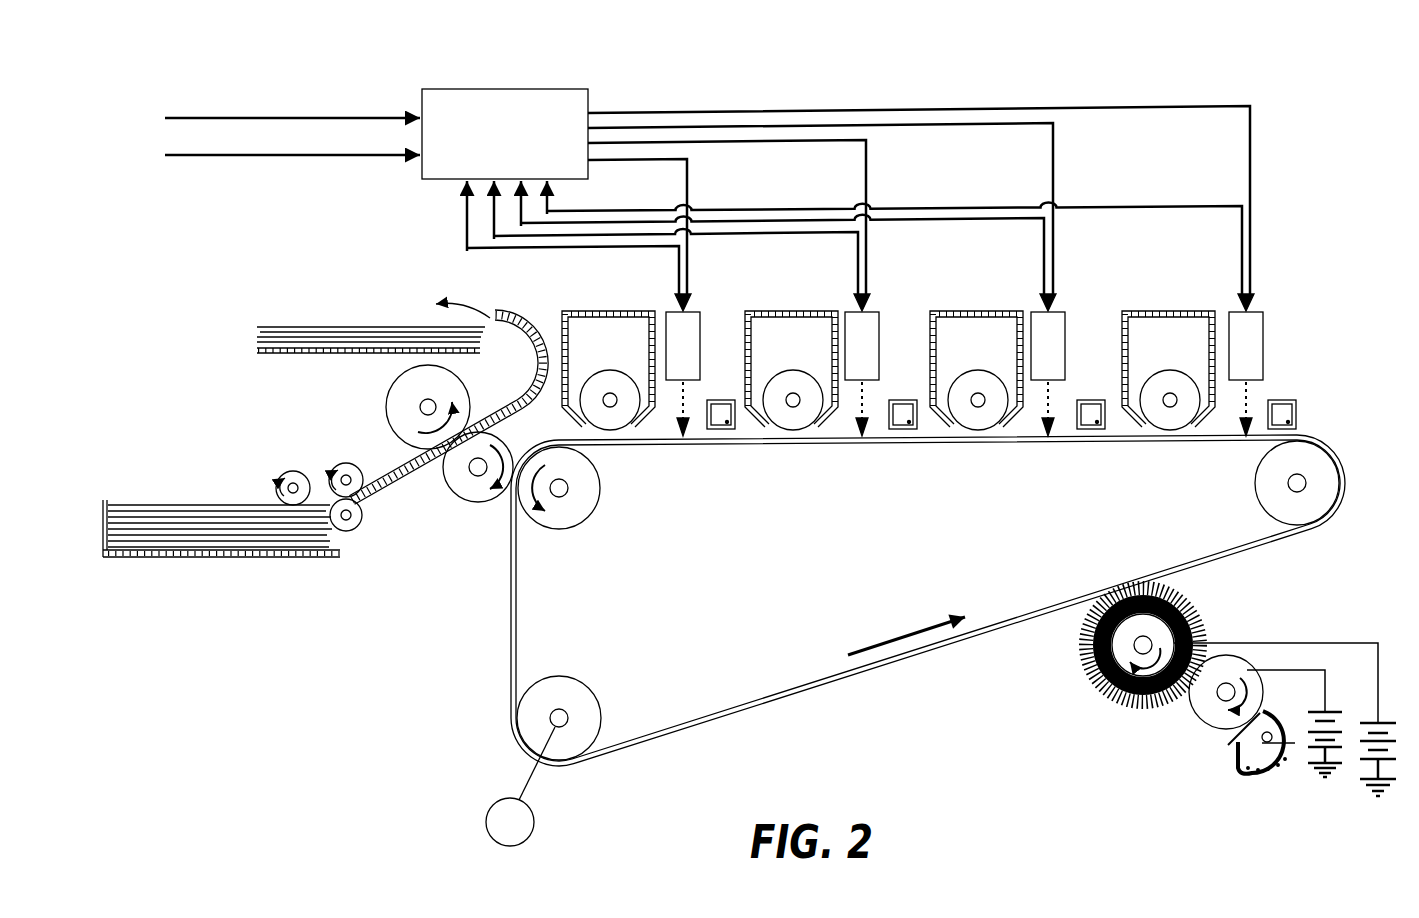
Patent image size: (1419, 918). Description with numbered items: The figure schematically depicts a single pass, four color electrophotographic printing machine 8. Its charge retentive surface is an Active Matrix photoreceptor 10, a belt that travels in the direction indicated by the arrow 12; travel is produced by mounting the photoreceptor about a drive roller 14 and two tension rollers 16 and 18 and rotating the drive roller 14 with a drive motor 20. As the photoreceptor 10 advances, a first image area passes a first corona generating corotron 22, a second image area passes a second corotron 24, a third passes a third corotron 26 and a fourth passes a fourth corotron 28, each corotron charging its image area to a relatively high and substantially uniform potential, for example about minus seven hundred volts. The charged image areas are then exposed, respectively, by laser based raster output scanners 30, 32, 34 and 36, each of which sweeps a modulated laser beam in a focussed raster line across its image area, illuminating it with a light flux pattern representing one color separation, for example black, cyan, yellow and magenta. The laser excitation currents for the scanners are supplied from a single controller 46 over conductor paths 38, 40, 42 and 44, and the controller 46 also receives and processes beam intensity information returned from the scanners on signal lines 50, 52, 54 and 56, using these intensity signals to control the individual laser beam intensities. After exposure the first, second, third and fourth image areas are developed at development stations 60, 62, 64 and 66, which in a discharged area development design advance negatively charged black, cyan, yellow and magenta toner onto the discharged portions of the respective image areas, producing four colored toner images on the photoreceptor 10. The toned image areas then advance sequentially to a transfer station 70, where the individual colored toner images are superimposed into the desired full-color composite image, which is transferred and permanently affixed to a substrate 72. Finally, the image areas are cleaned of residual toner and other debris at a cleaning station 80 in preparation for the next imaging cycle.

The printing machine 8 is at (1290, 140).
The photoreceptor 10 is at (740, 704).
The arrow 12 is at (898, 637).
The drive roller 14 is at (591, 702).
The tension roller 16 is at (1310, 506).
The tension roller 18 is at (578, 516).
The drive motor 20 is at (500, 843).
The first corona generating corotron 22 is at (1282, 400).
The second corona generating corotron 24 is at (1088, 400).
The third corona generating corotron 26 is at (900, 400).
The fourth corona generating corotron 28 is at (716, 400).
The raster output scanner 30 is at (1252, 301).
The raster output scanner 32 is at (1058, 301).
The raster output scanner 34 is at (872, 301).
The raster output scanner 36 is at (690, 301).
The conductor path 38 is at (1165, 109).
The conductor path 40 is at (968, 126).
The conductor path 42 is at (808, 142).
The conductor path 44 is at (660, 161).
The controller 46 is at (508, 89).
The signal line 50 is at (1160, 209).
The signal line 52 is at (962, 221).
The signal line 54 is at (786, 236).
The signal line 56 is at (515, 250).
The first development station 60 is at (1167, 311).
The second development station 62 is at (978, 311).
The third development station 64 is at (801, 311).
The fourth development station 66 is at (621, 311).
The transfer station 70 is at (501, 506).
The substrate 72 is at (407, 314).
The cleaning station 80 is at (1075, 620).